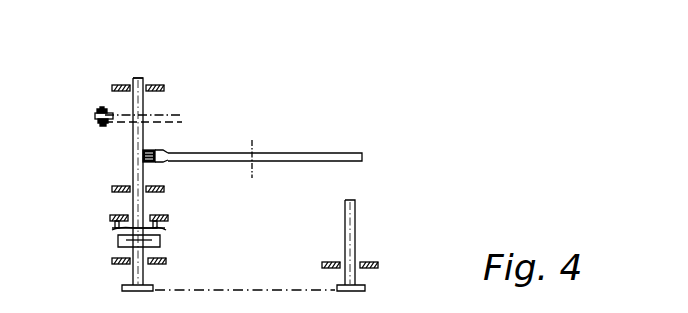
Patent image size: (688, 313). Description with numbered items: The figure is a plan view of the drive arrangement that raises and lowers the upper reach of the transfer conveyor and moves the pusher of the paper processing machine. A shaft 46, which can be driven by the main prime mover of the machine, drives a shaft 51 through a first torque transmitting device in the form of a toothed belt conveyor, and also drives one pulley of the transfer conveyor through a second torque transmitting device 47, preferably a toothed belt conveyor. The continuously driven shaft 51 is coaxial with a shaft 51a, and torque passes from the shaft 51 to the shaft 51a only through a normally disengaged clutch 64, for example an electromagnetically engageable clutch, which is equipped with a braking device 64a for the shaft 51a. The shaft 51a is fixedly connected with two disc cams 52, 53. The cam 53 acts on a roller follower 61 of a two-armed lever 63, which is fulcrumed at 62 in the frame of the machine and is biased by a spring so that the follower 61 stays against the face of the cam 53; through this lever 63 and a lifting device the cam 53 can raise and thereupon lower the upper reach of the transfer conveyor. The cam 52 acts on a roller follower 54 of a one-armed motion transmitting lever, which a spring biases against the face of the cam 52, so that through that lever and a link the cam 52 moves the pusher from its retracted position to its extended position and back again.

The shaft 46 is at (357, 250).
The second torque transmitting device 47 is at (222, 290).
The shaft 51 is at (133, 275).
The shaft 51a is at (142, 78).
The disc cam 52 is at (176, 116).
The disc cam 53 is at (117, 156).
The roller follower 54 is at (95, 121).
The roller follower 61 is at (155, 164).
The fulcrum 62 is at (253, 153).
The two-armed lever 63 is at (315, 160).
The clutch 64 is at (110, 243).
The braking device 64a is at (155, 232).